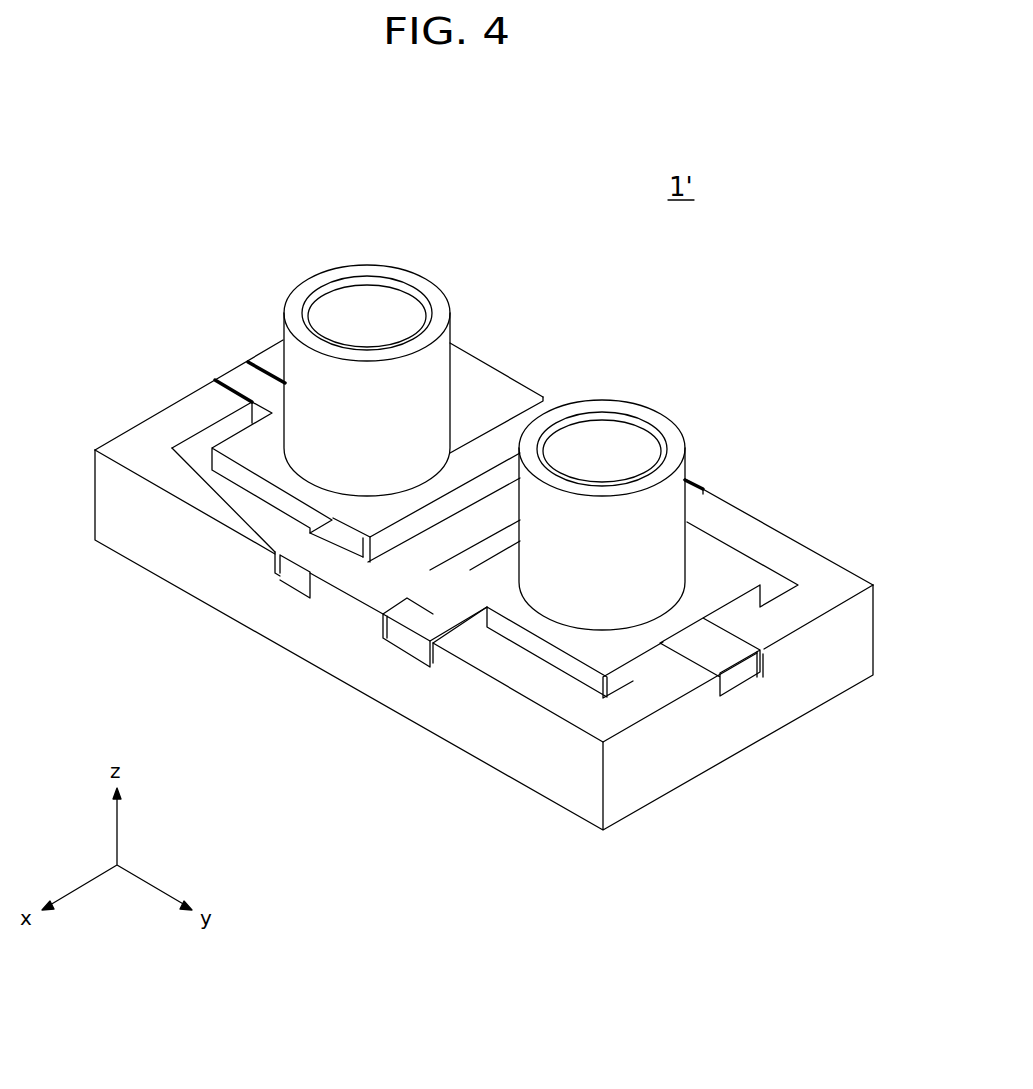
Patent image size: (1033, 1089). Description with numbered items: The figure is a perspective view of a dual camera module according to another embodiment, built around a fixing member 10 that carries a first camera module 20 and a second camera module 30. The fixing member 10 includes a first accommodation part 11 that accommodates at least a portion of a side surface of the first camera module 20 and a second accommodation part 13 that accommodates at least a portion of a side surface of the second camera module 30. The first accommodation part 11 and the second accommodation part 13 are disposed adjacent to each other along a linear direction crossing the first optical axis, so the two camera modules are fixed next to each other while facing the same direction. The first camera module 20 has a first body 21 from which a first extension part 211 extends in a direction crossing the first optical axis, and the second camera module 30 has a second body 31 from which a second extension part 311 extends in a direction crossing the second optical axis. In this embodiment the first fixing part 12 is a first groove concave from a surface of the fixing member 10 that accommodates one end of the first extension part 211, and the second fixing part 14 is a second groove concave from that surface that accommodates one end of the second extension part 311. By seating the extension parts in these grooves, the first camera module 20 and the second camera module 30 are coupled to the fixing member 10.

The fixing member 10 is at (717, 757).
The first accommodation part 11 is at (200, 467).
The first fixing part 12 is at (312, 586).
The second accommodation part 13 is at (562, 678).
The second fixing part 14 is at (442, 660).
The first camera module 20 is at (317, 244).
The first body 21 is at (247, 443).
The first extension part 211 is at (283, 568).
The second camera module 30 is at (679, 409).
The second body 31 is at (723, 577).
The second extension part 311 is at (410, 641).